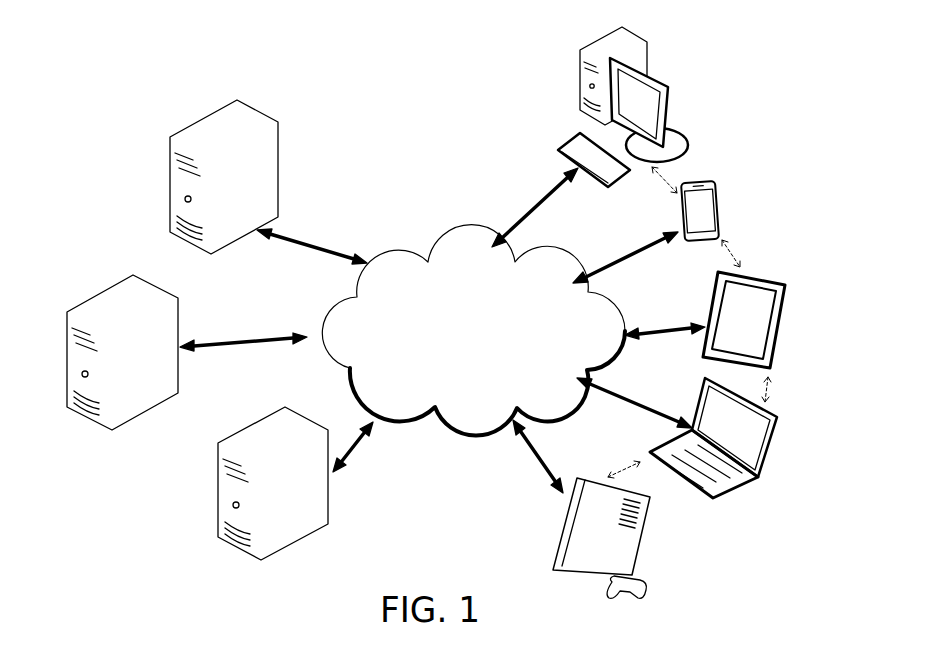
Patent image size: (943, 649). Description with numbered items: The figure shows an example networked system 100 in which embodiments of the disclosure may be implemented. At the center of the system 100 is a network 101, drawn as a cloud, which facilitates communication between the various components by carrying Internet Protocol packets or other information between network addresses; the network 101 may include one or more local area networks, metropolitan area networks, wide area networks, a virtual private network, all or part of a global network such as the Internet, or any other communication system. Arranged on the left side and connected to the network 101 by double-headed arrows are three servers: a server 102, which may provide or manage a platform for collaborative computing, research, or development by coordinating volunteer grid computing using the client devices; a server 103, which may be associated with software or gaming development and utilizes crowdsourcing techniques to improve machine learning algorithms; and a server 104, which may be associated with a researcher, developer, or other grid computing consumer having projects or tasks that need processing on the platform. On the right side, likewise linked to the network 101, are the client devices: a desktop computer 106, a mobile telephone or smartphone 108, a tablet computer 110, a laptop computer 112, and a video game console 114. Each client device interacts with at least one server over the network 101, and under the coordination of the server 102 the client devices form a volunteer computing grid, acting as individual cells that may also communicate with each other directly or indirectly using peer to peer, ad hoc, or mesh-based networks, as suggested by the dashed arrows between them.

The networked system 100 is at (348, 94).
The network 101 is at (430, 260).
The server 102 is at (88, 300).
The server 103 is at (182, 128).
The server 104 is at (240, 432).
The desktop computer 106 is at (578, 75).
The mobile telephone or smartphone 108 is at (720, 195).
The tablet computer 110 is at (780, 326).
The laptop computer 112 is at (763, 477).
The video game console 114 is at (650, 505).